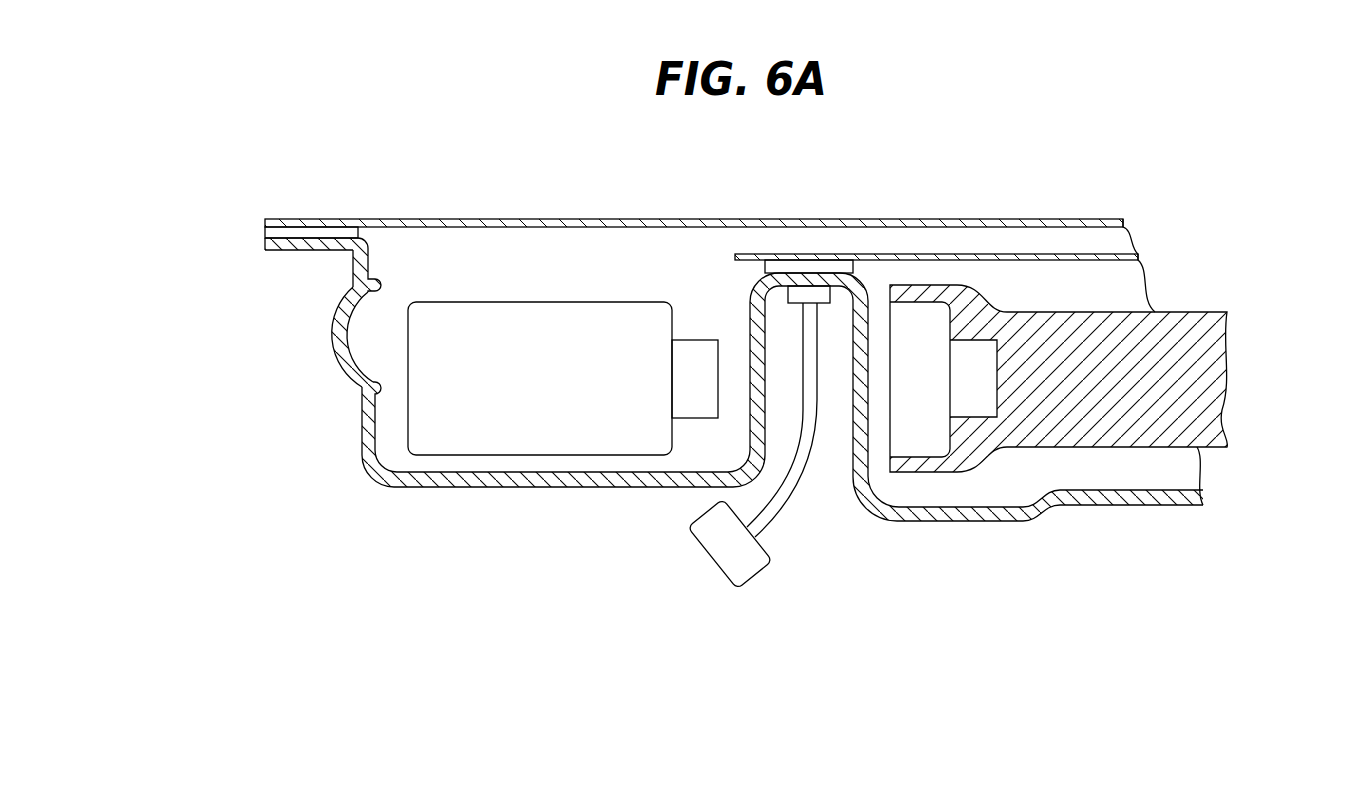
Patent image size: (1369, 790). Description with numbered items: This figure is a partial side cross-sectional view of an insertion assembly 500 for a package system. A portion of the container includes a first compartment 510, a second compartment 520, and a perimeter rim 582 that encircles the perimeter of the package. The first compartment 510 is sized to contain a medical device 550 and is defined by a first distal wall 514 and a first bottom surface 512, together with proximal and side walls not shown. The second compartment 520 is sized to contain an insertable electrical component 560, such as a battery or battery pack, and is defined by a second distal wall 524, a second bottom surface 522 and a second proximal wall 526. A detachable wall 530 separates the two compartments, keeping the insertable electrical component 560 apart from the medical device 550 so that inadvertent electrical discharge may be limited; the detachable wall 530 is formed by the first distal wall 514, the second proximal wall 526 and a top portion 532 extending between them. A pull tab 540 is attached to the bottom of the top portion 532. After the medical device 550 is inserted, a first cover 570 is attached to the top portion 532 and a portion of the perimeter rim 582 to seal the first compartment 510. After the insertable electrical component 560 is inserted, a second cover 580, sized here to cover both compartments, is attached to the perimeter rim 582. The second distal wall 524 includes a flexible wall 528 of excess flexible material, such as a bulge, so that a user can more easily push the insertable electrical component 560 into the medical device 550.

The insertion assembly 500 is at (845, 618).
The first compartment 510 is at (1005, 434).
The first bottom surface 512 is at (935, 523).
The first distal wall 514 is at (852, 457).
The second compartment 520 is at (498, 353).
The second bottom surface 522 is at (418, 487).
The second distal wall 524 is at (360, 420).
The second proximal wall 526 is at (748, 413).
The flexible wall 528 is at (332, 335).
The detachable wall 530 is at (728, 280).
The top portion 532 is at (855, 277).
The pull tab 540 is at (718, 567).
The medical device 550 is at (1208, 400).
The insertable electrical component 560 is at (525, 428).
The first cover 570 is at (983, 255).
The second cover 580 is at (562, 220).
The perimeter rim 582 is at (287, 252).